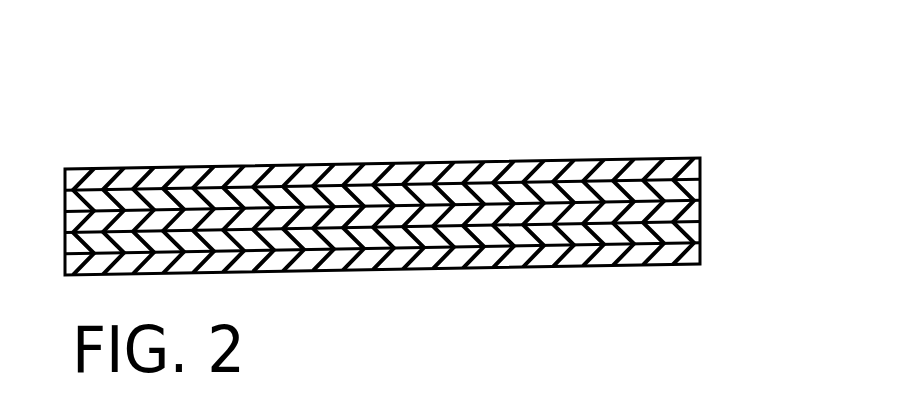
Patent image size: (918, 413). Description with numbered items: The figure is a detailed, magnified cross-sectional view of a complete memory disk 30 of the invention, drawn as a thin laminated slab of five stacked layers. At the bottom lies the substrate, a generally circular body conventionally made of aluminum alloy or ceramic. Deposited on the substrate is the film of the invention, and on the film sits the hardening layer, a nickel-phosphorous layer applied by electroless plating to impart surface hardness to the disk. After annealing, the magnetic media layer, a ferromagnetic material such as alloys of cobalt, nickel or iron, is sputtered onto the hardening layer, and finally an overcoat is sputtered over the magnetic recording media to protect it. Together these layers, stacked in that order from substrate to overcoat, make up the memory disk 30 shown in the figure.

The memory disk 30 is at (383, 151).